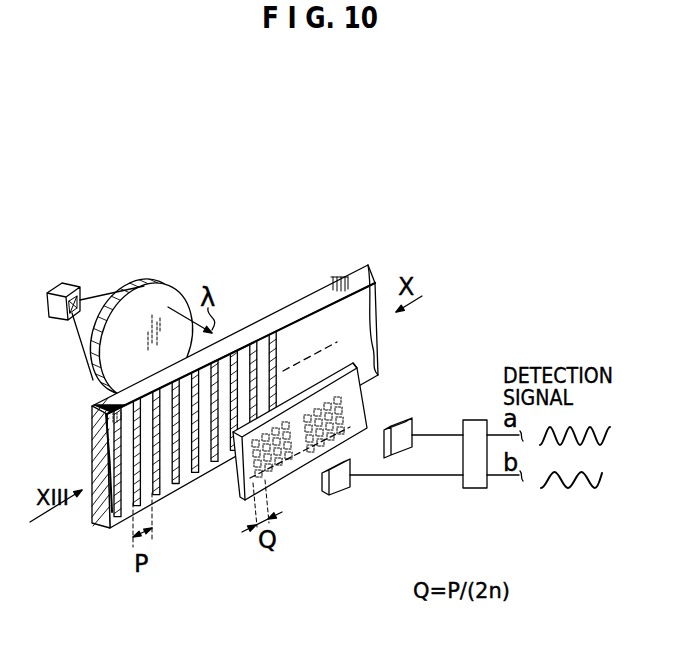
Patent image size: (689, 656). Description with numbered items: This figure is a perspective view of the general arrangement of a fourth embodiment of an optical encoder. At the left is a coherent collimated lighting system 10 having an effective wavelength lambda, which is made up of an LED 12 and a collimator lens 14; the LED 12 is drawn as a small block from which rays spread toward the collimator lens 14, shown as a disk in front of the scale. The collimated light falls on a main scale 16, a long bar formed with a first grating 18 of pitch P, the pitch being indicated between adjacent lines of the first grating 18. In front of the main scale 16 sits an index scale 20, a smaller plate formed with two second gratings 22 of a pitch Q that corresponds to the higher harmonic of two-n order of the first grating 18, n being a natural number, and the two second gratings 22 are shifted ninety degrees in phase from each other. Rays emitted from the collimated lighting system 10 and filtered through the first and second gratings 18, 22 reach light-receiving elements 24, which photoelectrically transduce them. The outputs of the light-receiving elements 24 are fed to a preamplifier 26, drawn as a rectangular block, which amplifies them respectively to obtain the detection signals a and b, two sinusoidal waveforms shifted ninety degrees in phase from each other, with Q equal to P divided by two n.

The coherent collimated lighting system 10 is at (144, 199).
The LED 12 is at (73, 290).
The collimator lens 14 is at (150, 284).
The main scale 16 is at (268, 315).
The first grating 18 is at (297, 345).
The index scale 20 is at (287, 479).
The second gratings 22 is at (242, 487).
The light-receiving elements 24 is at (338, 486).
The preamplifier 26 is at (475, 420).